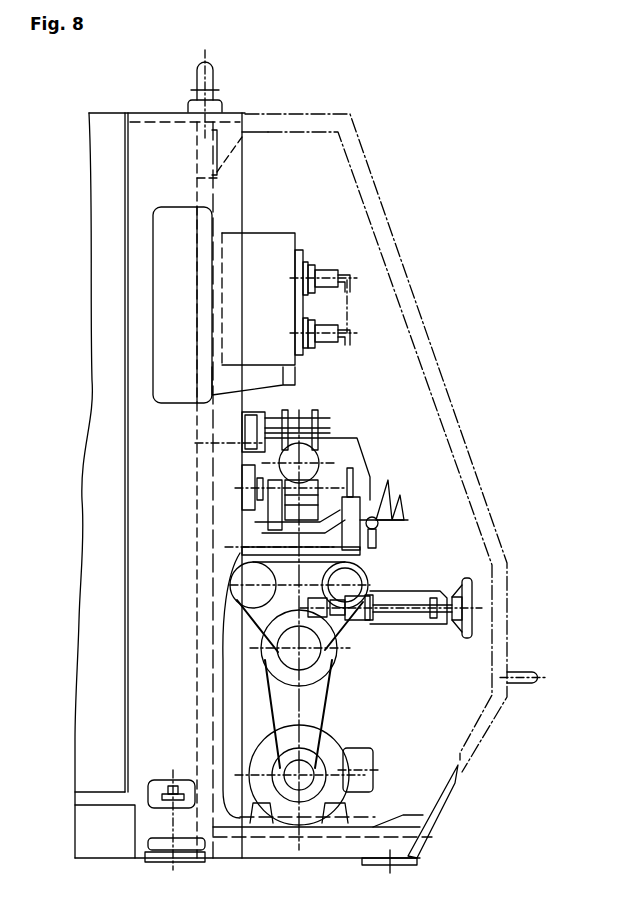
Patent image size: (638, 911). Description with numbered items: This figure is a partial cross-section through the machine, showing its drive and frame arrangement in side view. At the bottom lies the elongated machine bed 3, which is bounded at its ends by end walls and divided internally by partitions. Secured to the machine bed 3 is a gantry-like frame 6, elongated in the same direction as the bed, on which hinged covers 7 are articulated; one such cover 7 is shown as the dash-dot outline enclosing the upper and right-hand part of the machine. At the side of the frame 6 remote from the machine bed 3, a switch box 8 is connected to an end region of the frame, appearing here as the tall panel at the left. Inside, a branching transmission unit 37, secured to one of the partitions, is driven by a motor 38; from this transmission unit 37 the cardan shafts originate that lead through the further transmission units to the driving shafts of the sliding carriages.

The machine bed 3 is at (279, 850).
The gantry-like frame 6 is at (143, 628).
The hinged cover 7 is at (360, 167).
The switch box 8 is at (117, 433).
The branching transmission unit 37 is at (345, 615).
The motor 38 is at (323, 745).